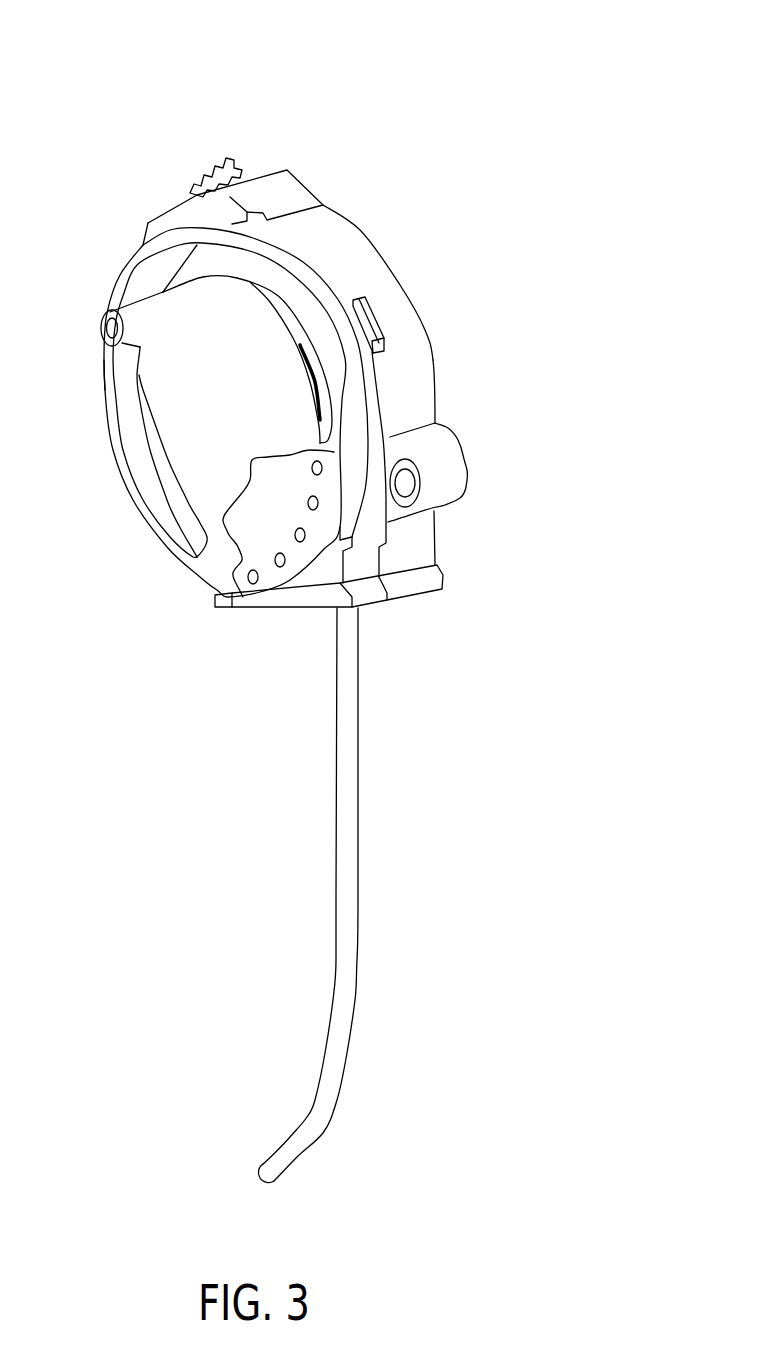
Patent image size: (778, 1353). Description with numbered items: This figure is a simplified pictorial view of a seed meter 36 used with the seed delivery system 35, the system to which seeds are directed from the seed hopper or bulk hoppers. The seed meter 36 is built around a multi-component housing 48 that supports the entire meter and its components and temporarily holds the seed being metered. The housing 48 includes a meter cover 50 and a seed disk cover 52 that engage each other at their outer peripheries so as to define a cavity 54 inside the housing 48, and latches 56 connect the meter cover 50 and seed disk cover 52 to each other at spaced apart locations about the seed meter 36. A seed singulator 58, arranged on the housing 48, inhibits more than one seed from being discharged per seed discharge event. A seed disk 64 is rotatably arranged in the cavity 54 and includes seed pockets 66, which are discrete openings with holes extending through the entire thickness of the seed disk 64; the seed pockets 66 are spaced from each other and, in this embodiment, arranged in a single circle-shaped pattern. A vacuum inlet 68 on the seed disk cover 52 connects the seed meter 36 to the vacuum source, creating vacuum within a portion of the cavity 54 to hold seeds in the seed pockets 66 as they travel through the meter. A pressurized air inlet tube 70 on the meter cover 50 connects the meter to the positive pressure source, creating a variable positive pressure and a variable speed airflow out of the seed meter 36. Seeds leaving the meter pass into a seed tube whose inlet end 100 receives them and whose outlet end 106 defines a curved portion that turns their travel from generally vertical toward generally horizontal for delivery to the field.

The seed delivery system 35 is at (384, 86).
The seed meter 36 is at (278, 164).
The housing 48 is at (323, 238).
The meter cover 50 is at (417, 372).
The seed disk cover 52 is at (150, 397).
The cavity 54 is at (378, 410).
The latches 56 is at (378, 319).
The seed singulator 58 is at (215, 156).
The seed disk 64 is at (258, 498).
The seed pockets 66 is at (318, 476).
The vacuum inlet 68 is at (100, 327).
The pressurized air inlet tube 70 is at (448, 480).
The inlet end 100 is at (347, 643).
The outlet end 106 is at (297, 1153).